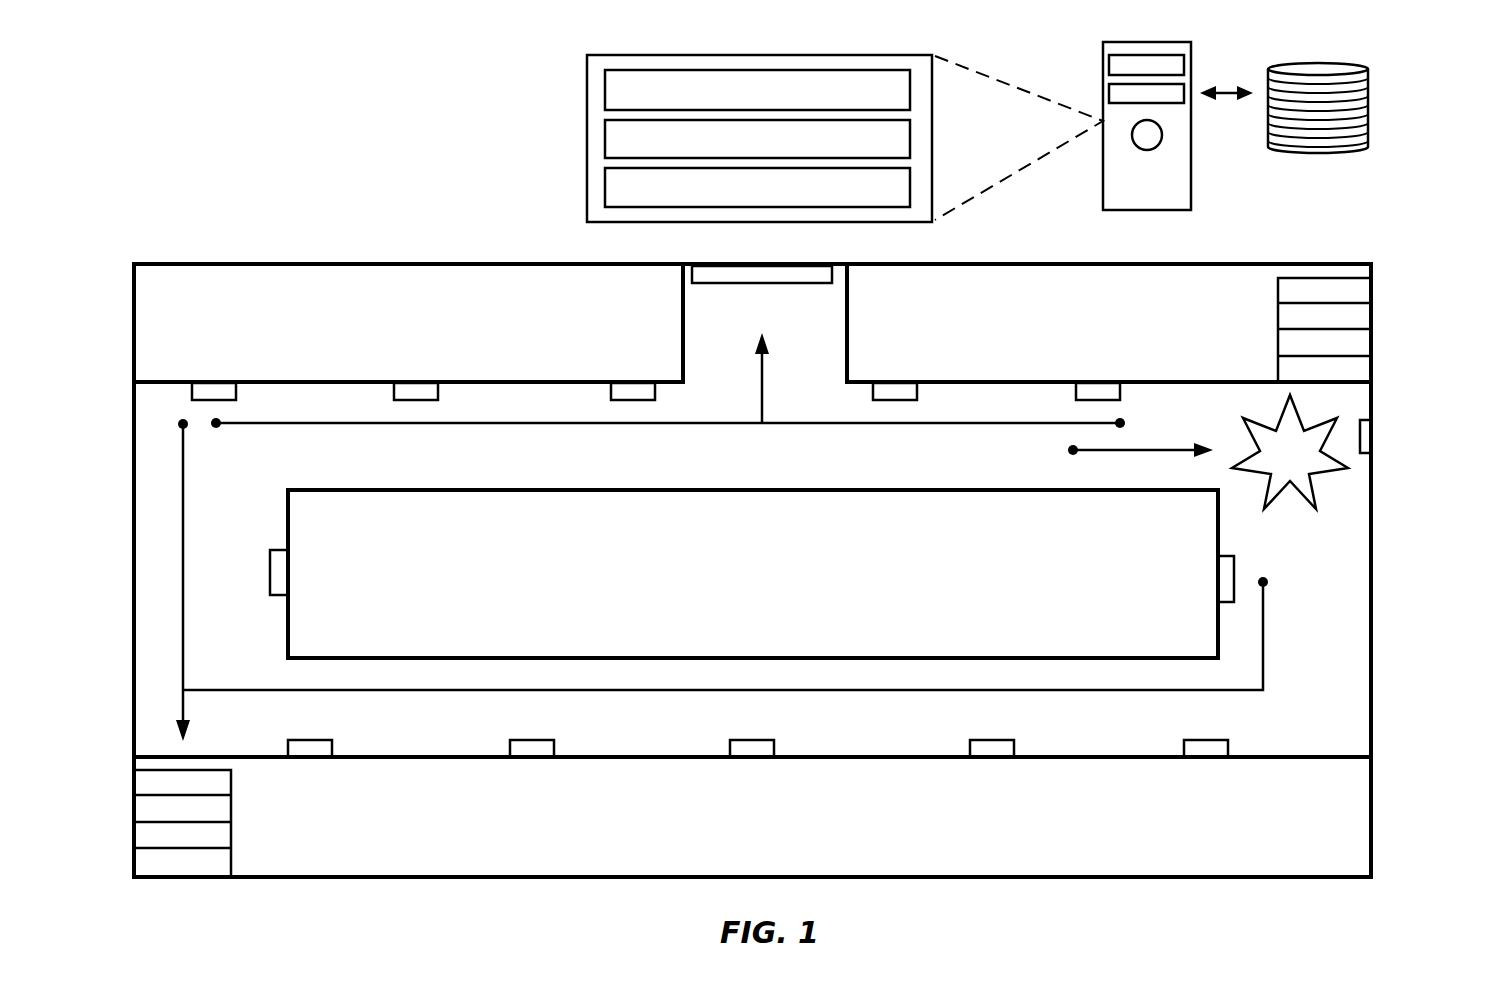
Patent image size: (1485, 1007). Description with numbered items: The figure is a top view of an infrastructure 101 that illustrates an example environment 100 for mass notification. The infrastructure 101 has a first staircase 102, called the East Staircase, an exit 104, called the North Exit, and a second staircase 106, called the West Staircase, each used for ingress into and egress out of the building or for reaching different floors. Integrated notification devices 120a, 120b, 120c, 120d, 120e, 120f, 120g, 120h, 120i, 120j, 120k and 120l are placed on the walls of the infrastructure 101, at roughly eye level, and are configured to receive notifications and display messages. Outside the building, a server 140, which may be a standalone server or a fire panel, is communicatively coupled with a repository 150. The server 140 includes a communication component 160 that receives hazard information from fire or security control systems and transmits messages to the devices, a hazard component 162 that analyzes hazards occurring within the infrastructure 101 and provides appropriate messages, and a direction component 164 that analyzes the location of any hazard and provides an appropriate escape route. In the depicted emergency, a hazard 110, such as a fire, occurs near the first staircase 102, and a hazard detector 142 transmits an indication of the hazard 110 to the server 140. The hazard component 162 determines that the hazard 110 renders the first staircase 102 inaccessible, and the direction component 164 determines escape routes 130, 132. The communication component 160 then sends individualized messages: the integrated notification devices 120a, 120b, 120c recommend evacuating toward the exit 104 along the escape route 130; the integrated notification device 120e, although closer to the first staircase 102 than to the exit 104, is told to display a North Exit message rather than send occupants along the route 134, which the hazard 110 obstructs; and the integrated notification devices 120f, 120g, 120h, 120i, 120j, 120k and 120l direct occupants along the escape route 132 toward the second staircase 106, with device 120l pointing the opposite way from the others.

The environment 100 is at (200, 68).
The infrastructure 101 is at (168, 232).
The first staircase 102 is at (1371, 342).
The exit 104 is at (740, 284).
The second staircase 106 is at (203, 874).
The hazard 110 is at (1338, 470).
The integrated notification device 120a is at (212, 381).
The integrated notification device 120b is at (405, 381).
The integrated notification device 120c is at (645, 381).
The integrated notification device 120d is at (895, 381).
The integrated notification device 120e is at (1090, 381).
The integrated notification device 120f is at (322, 758).
The integrated notification device 120g is at (540, 758).
The integrated notification device 120h is at (765, 758).
The integrated notification device 120i is at (1005, 758).
The integrated notification device 120j is at (1210, 758).
The integrated notification device 120k is at (290, 578).
The integrated notification device 120l is at (1216, 582).
The escape route 130 is at (762, 421).
The escape route 132 is at (183, 689).
The route 134 is at (1145, 450).
The server 140 is at (1190, 150).
The hazard detector 142 is at (1372, 437).
The repository 150 is at (1368, 135).
The communication component 160 is at (757, 90).
The hazard component 162 is at (757, 139).
The direction component 164 is at (757, 187).